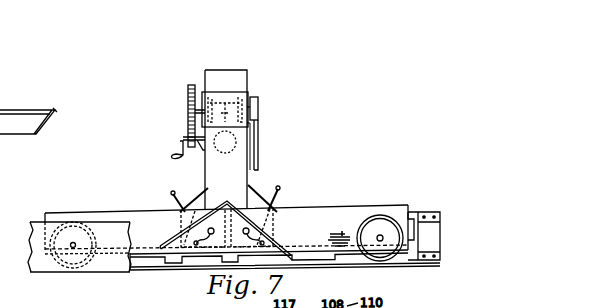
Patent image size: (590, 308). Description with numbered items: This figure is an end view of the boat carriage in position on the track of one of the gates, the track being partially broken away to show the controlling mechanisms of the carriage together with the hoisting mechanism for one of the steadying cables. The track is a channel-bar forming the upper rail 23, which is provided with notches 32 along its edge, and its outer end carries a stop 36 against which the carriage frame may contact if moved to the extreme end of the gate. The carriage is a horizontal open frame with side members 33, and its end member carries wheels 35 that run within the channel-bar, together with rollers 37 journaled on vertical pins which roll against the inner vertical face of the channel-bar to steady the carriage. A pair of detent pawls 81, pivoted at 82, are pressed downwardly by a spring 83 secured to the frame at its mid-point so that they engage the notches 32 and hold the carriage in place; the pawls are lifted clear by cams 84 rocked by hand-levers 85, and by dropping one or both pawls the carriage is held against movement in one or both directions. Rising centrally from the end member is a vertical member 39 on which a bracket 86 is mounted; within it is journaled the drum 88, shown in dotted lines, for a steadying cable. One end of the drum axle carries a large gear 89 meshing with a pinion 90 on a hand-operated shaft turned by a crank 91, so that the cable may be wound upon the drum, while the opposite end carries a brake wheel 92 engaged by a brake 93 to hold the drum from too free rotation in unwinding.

The upper rail 23 is at (40, 253).
The notches 32 is at (176, 258).
The side members 33 is at (318, 218).
The wheels 35 is at (385, 226).
The stop 36 is at (432, 239).
The rollers 37 is at (326, 239).
The vertical members 39 is at (248, 87).
The detent pawls 81 is at (180, 237).
The pivot 82 is at (262, 197).
The spring 83 is at (207, 201).
The cams 84 is at (270, 232).
The hand-levers 85 is at (171, 193).
The brackets 86 is at (222, 97).
The drum 88 is at (225, 142).
The large gear 89 is at (188, 99).
The pinion 90 is at (192, 140).
The crank 91 is at (181, 151).
The brake wheel 92 is at (259, 104).
The brake 93 is at (259, 129).